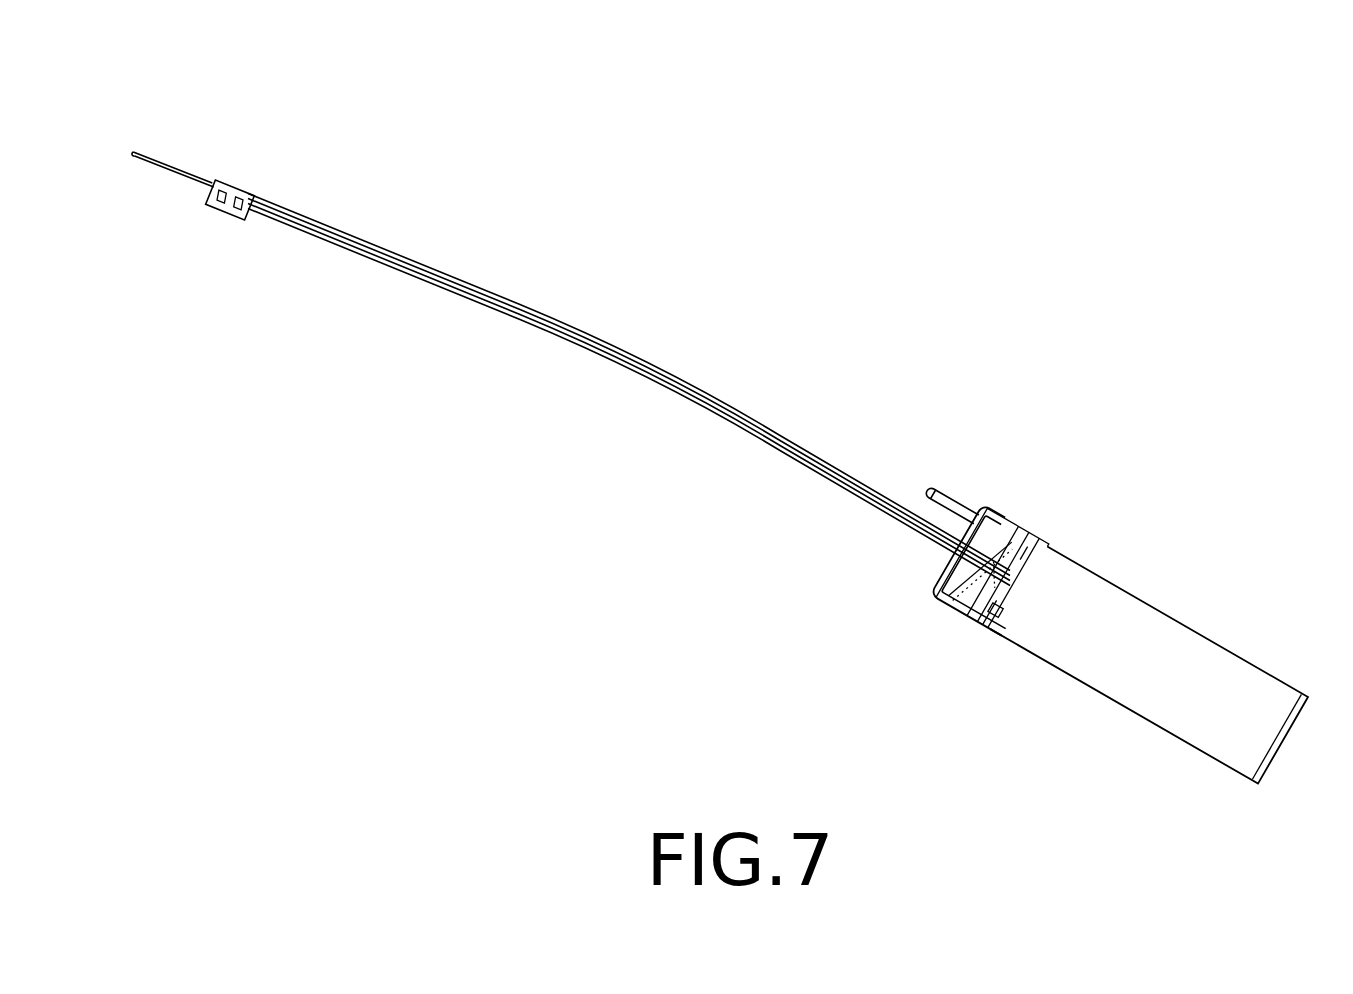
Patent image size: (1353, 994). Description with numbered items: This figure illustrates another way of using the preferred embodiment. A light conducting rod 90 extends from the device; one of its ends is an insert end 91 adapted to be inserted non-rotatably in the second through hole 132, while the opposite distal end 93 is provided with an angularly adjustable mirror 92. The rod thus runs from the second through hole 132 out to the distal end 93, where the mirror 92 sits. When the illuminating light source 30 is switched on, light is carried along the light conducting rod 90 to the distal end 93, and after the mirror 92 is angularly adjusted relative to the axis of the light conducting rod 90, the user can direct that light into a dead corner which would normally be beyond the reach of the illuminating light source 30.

The illuminating light source 30 is at (1013, 577).
The light conducting rod 90 is at (802, 466).
The insert end 91 is at (1000, 512).
The angularly adjustable mirror 92 is at (180, 167).
The distal end 93 is at (233, 188).
The second through hole 132 is at (966, 592).